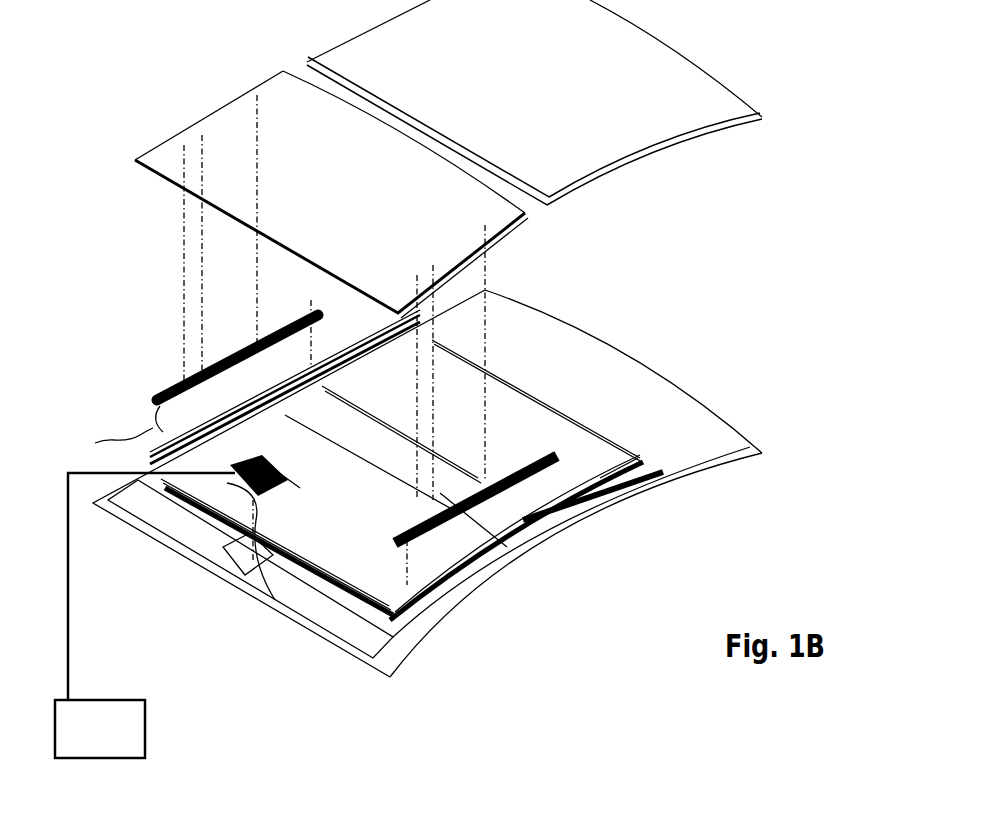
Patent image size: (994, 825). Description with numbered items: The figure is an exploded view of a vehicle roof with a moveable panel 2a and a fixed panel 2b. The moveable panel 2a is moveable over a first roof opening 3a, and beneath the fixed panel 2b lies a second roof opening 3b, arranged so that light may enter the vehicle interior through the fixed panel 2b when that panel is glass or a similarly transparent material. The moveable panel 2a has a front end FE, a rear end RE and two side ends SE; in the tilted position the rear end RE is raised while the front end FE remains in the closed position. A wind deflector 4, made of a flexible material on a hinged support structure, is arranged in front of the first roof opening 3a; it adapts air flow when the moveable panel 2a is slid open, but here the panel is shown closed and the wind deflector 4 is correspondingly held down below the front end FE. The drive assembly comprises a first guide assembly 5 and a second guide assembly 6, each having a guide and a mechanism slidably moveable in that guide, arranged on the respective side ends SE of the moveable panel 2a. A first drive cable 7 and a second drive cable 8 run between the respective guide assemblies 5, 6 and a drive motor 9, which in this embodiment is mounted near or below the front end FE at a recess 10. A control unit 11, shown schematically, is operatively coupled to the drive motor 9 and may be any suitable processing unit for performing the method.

The moveable panel 2a is at (331, 194).
The fixed panel 2b is at (534, 102).
The first roof opening 3a is at (315, 462).
The second roof opening 3b is at (427, 483).
The wind deflector 4 is at (165, 494).
The first guide assembly 5 is at (490, 505).
The second guide assembly 6 is at (162, 360).
The first drive cable 7 is at (303, 580).
The second drive cable 8 is at (111, 445).
The drive motor 9 is at (250, 506).
The recess 10 is at (263, 553).
The control unit 11 is at (145, 615).
The rear end RE is at (336, 102).
The side end SE is at (208, 110).
The front end FE is at (225, 239).